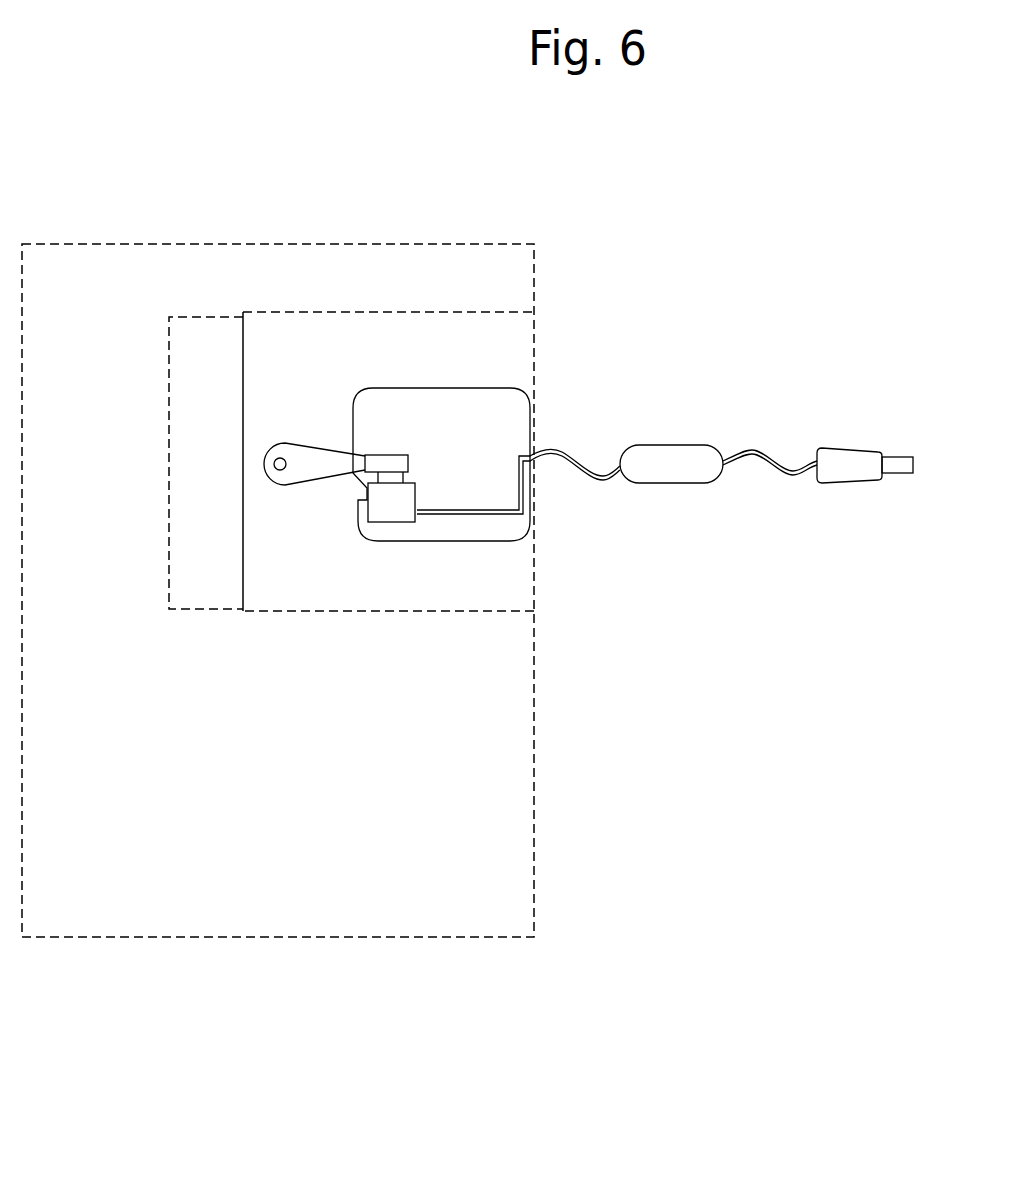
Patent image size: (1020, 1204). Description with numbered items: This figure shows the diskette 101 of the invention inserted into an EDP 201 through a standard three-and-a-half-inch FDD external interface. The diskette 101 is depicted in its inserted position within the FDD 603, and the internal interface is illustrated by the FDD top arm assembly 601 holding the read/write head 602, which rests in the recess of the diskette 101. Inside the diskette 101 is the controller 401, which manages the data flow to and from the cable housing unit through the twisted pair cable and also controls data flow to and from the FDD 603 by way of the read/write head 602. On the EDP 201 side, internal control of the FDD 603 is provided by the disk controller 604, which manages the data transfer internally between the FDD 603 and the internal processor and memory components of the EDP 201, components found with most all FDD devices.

The diskette 101 is at (500, 414).
The EDP 201 is at (206, 962).
The controller 401 is at (391, 502).
The FDD top arm assembly 601 is at (300, 440).
The read/write head 602 is at (388, 445).
The FDD 603 is at (429, 620).
The disk controller 604 is at (160, 556).